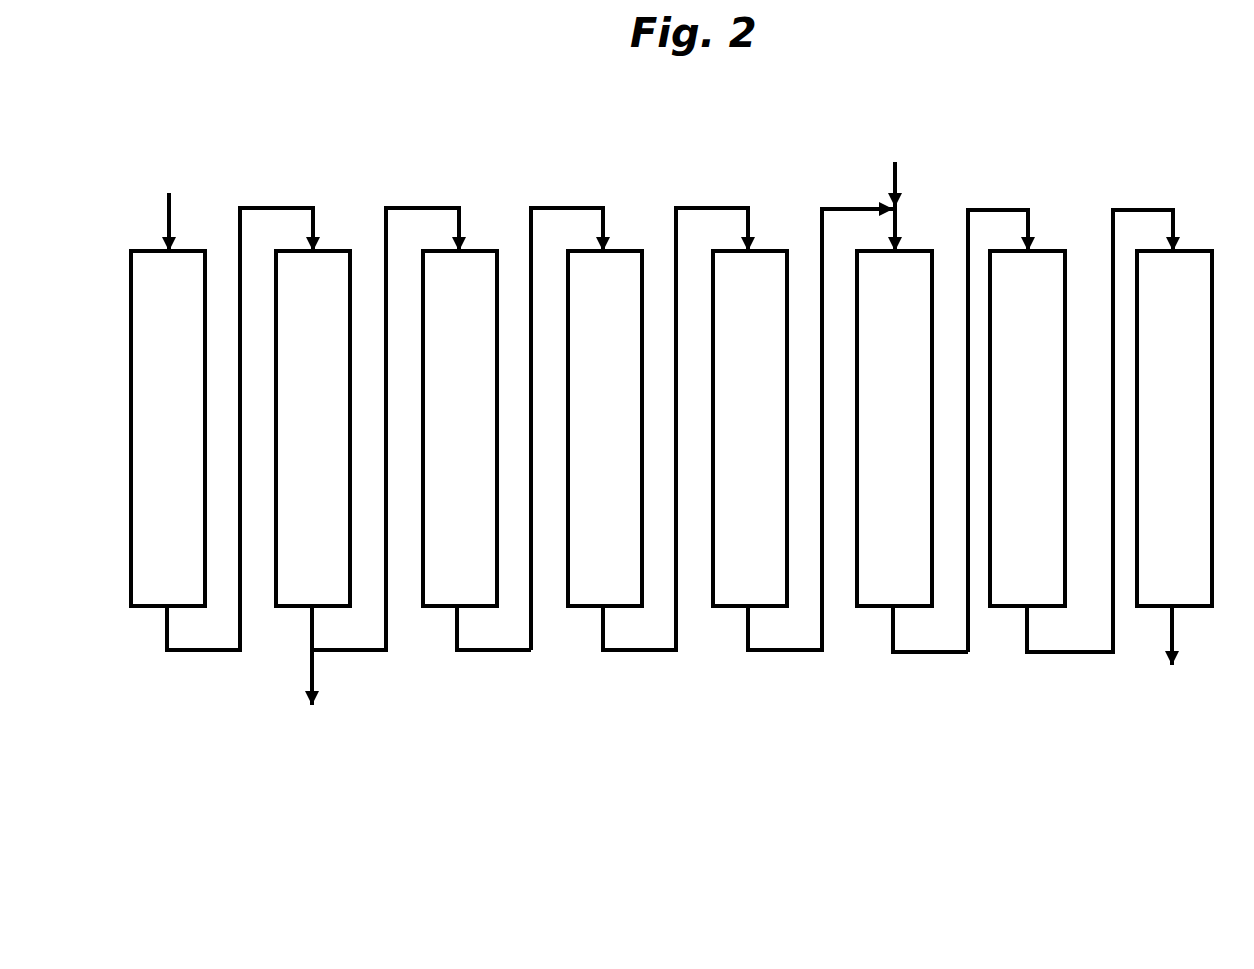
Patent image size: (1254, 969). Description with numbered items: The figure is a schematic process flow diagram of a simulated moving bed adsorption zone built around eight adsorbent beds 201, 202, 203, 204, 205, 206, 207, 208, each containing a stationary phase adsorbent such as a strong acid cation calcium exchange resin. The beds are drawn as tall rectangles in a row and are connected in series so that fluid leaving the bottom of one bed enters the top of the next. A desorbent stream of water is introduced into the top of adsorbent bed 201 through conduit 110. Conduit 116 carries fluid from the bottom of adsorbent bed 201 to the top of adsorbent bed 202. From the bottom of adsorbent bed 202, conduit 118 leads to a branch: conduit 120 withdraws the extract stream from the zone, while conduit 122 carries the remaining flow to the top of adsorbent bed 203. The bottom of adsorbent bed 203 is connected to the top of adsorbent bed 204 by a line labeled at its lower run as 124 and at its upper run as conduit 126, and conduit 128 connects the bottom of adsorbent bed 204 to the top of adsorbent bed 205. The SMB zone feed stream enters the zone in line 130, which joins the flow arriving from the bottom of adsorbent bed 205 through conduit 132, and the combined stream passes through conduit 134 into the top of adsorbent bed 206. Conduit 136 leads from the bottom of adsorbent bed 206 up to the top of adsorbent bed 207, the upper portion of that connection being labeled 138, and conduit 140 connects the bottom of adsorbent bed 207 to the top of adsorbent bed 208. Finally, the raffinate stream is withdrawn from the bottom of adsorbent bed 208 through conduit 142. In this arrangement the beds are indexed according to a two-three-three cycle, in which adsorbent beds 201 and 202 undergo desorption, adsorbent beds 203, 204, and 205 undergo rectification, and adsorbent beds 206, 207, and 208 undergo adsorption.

The conduit 110 is at (168, 218).
The conduit 116 is at (200, 651).
The conduit 118 is at (311, 641).
The conduit 120 is at (314, 676).
The conduit 122 is at (437, 203).
The third stage effluent stream 124 is at (480, 651).
The conduit 126 is at (580, 203).
The conduit 128 is at (700, 203).
The line 130 is at (892, 175).
The conduit 132 is at (782, 651).
The conduit 134 is at (898, 220).
The conduit 136 is at (940, 653).
The stream to seventh stage 138 is at (1028, 218).
The conduit 140 is at (1073, 653).
The conduit 142 is at (1173, 630).
The adsorbent bed 201 is at (168, 428).
The adsorbent bed 202 is at (313, 428).
The adsorbent bed 203 is at (460, 428).
The adsorbent bed 204 is at (605, 428).
The adsorbent bed 205 is at (750, 428).
The adsorbent bed 206 is at (894, 428).
The adsorbent bed 207 is at (1027, 428).
The adsorbent bed 208 is at (1174, 428).